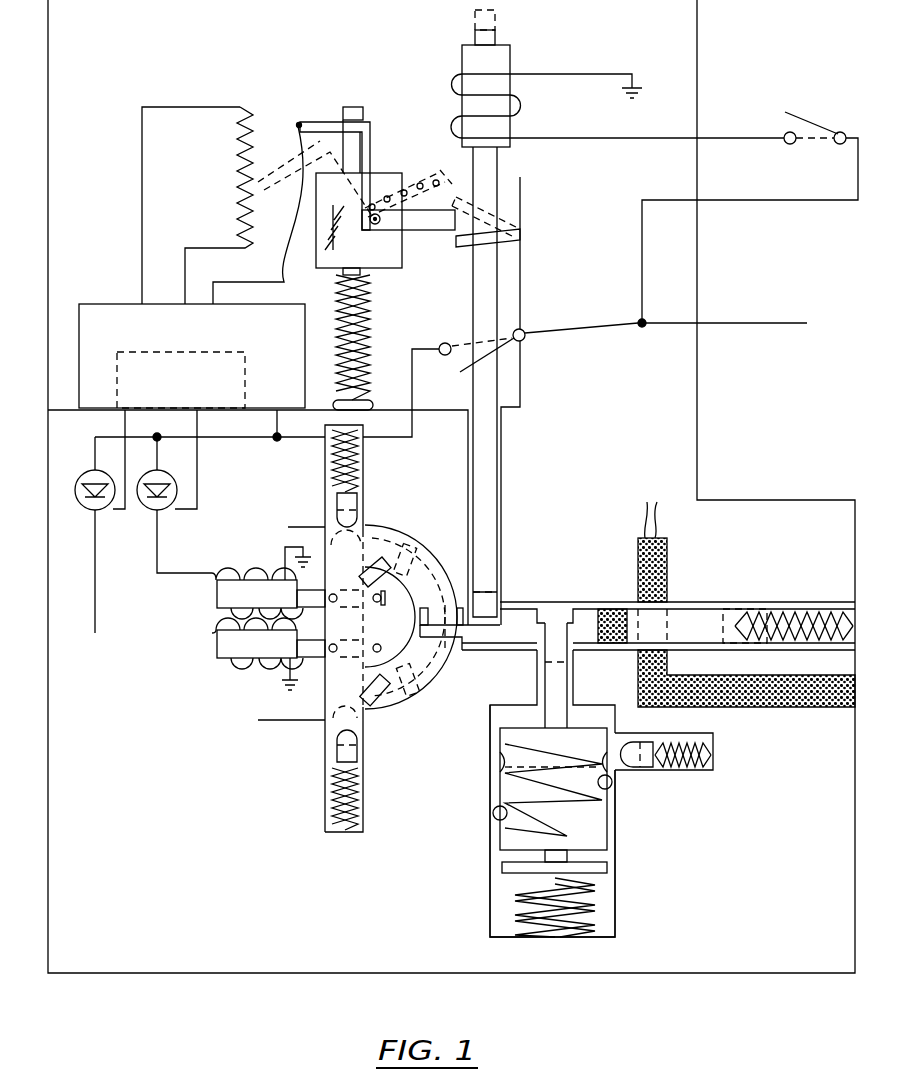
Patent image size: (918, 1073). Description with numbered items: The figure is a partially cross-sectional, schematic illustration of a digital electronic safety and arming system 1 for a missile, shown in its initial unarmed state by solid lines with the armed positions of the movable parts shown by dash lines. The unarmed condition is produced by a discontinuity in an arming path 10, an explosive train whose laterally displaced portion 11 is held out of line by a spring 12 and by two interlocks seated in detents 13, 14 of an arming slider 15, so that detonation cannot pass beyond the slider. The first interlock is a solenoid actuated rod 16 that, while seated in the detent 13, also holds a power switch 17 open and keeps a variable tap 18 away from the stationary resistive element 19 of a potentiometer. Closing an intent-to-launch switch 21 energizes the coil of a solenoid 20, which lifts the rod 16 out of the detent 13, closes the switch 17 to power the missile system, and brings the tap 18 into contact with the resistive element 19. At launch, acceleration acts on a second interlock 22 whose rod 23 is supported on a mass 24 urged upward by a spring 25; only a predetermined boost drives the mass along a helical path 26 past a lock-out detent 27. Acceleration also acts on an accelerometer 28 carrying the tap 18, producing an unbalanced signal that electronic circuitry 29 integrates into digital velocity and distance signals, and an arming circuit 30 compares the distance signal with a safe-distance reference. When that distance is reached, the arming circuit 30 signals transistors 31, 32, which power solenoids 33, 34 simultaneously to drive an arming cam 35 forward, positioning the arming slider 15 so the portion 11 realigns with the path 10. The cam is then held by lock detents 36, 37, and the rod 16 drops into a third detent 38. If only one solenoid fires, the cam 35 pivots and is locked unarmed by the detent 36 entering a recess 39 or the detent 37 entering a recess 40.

The arming device 1 is at (500, 467).
The arming path 10 is at (667, 560).
The laterally displaced portion 11 is at (624, 606).
The spring 12 is at (788, 620).
The detent 13 is at (497, 637).
The detent 14 is at (554, 619).
The arming slider 15 is at (525, 614).
The solenoid actuated rod 16 is at (498, 168).
The power switch 17 is at (461, 343).
The variable tap 18 is at (300, 124).
The stationary resistive element 19 is at (249, 98).
The solenoid 20 is at (462, 56).
The switch 21 is at (800, 120).
The second interlock 22 is at (615, 830).
The rod 23 is at (567, 685).
The mass 24 is at (500, 786).
The spring 25 is at (612, 871).
The helical path 26 is at (596, 796).
The lock-out detent 27 is at (636, 772).
The accelerometer 28 is at (402, 270).
The electronic circuitry 29 is at (120, 302).
The arming circuit 30 is at (247, 379).
The transistor 31 is at (90, 470).
The transistor 32 is at (162, 473).
The solenoid 33 is at (238, 668).
The solenoid 34 is at (268, 572).
The arming cam 35 is at (318, 720).
The lock detent 36 is at (364, 500).
The lock detent 37 is at (364, 758).
The third detent 38 is at (443, 640).
The recess 39 is at (368, 530).
The recess 40 is at (392, 702).